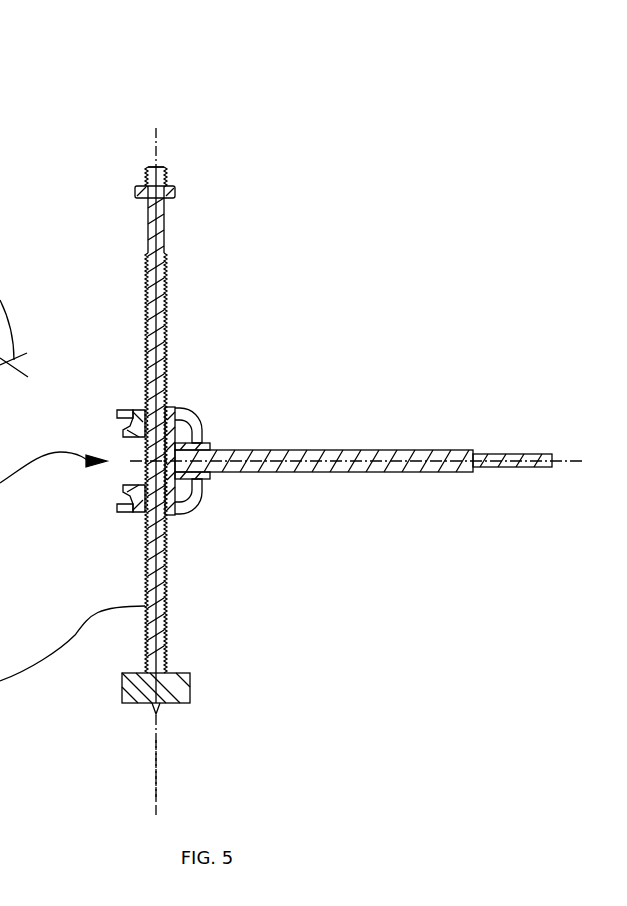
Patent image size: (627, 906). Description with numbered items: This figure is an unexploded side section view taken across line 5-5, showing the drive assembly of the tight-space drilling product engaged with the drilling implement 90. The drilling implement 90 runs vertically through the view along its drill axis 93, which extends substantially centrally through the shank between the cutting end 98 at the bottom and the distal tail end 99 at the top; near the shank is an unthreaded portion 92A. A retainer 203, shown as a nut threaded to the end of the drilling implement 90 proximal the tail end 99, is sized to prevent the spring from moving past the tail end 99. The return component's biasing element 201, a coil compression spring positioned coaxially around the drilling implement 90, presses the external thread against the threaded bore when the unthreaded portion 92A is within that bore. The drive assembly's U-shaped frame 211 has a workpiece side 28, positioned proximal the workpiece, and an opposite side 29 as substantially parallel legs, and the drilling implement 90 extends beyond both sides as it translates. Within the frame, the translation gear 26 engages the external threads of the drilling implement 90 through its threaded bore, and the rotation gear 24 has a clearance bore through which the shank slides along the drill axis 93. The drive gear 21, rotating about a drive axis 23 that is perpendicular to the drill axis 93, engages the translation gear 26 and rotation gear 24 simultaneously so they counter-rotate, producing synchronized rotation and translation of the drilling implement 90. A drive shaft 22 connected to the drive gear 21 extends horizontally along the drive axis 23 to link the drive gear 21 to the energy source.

The drilling implement 90 is at (122, 252).
The unthreaded portion 92A is at (165, 220).
The tail end 99 is at (160, 186).
The retainer 203 is at (177, 182).
The biasing element 201 is at (170, 380).
The opposite side 29 is at (127, 410).
The workpiece side 28 is at (127, 512).
The drive gear 21 is at (207, 480).
The translation gear 26 is at (178, 410).
The frame 211 is at (197, 500).
The rotation gear 24 is at (178, 514).
The drive shaft 22 is at (375, 450).
The drive axis 23 is at (572, 462).
The cutting end 98 is at (158, 715).
The drill axis 93 is at (156, 771).
The line 5- 5 is at (23, 346).